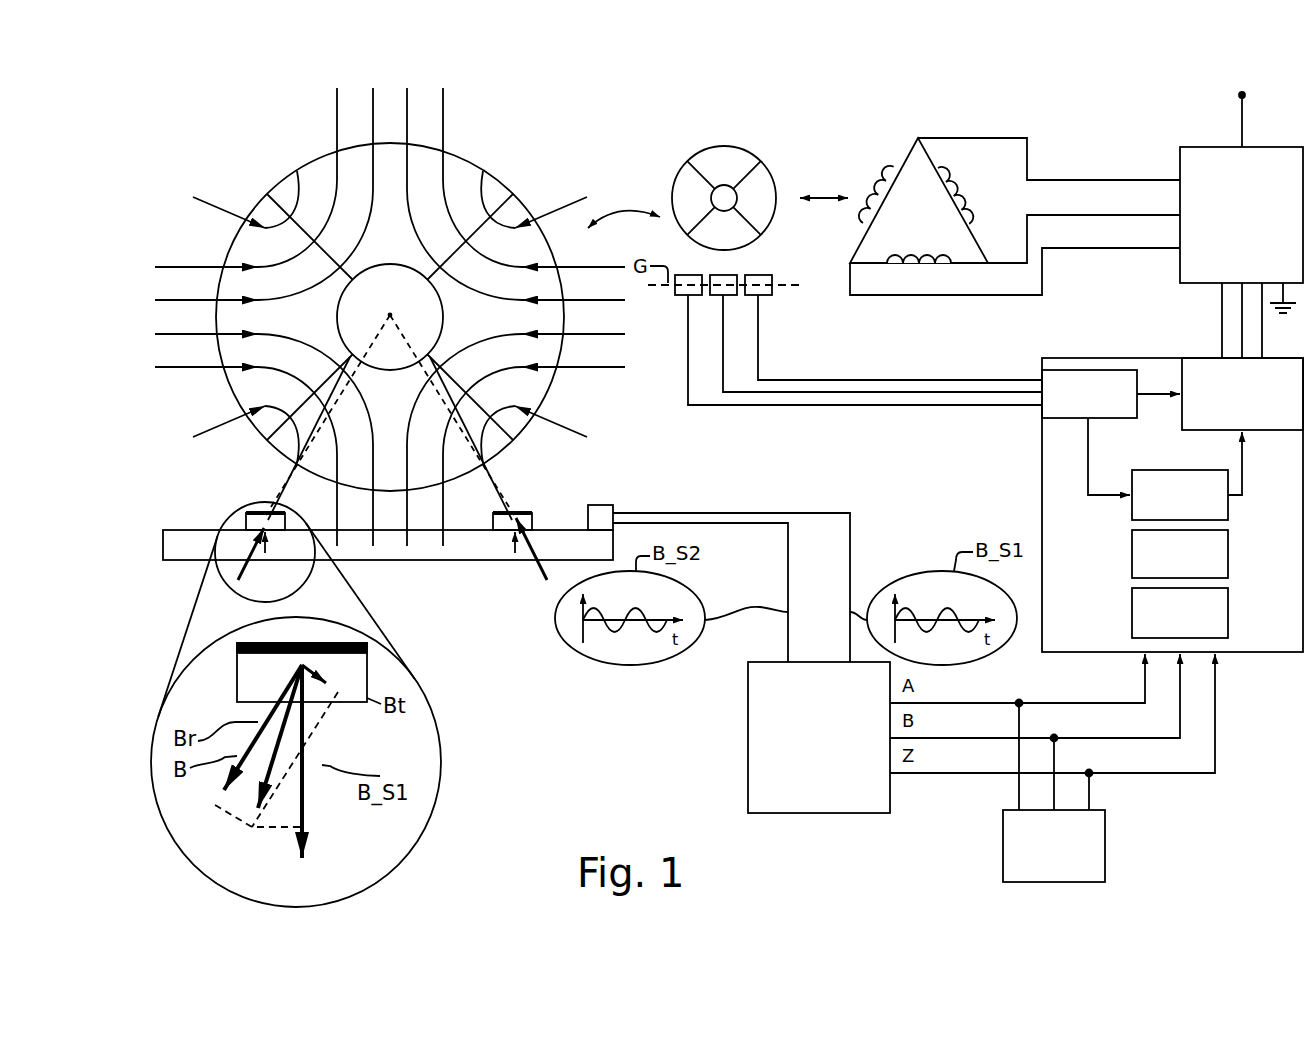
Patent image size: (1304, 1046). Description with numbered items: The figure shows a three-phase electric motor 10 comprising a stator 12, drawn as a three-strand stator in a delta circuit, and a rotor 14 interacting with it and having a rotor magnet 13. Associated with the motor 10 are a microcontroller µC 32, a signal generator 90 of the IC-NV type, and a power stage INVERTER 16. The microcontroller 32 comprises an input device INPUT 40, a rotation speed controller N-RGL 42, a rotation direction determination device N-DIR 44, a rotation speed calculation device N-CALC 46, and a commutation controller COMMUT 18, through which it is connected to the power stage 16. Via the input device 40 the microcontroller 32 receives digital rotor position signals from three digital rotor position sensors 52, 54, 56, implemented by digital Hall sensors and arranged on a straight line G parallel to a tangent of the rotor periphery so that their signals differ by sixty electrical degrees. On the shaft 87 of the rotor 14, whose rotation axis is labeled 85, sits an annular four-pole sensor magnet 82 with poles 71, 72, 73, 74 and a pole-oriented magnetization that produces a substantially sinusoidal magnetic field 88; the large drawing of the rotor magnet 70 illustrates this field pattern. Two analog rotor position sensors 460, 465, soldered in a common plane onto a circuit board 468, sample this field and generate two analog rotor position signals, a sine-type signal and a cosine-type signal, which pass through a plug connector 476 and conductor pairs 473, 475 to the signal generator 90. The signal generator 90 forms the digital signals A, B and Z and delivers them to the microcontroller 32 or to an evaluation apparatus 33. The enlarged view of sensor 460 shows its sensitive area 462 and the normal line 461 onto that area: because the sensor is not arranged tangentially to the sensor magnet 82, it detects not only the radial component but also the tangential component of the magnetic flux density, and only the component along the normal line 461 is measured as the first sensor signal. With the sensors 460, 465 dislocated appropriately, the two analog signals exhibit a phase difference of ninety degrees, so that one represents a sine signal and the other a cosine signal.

The electric motor 10 is at (595, 131).
The stator 12 is at (930, 218).
The rotor magnet 13 is at (704, 162).
The rotor 14 is at (777, 131).
The power stage INVERTER 16 is at (1289, 177).
The commutation controller COMMUT 18 is at (1265, 431).
The microcontroller µC 32 is at (1299, 563).
The evaluation apparatus 33 is at (1054, 791).
The input device INPUT 40 is at (1103, 420).
The rotation speed controller N-RGL 42 is at (1178, 470).
The rotation direction determination device N-DIR 44 is at (1132, 565).
The rotation speed calculation device N-CALC 46 is at (1132, 625).
The digital rotor position sensor 52 is at (762, 297).
The digital rotor position sensor 54 is at (718, 297).
The digital rotor position sensor 56 is at (680, 295).
The rotor magnet 70 is at (321, 156).
The pole 71 is at (547, 397).
The pole 72 is at (412, 546).
The pole 73 is at (230, 343).
The pole 74 is at (493, 190).
The sensor magnet 82 is at (520, 214).
The rotation axis 85 is at (394, 315).
The shaft 87 is at (373, 310).
The magnetic field 88 is at (190, 369).
The signal generator 90 is at (830, 775).
The analog rotor position sensor 460 is at (246, 522).
The normal line 461 is at (304, 830).
The sensitive area 462 is at (237, 699).
The analog rotor position sensor 465 is at (533, 520).
The circuit board 468 is at (481, 547).
The conductor pair 473 is at (850, 565).
The conductor pair 475 is at (788, 564).
The plug connector 476 is at (600, 505).